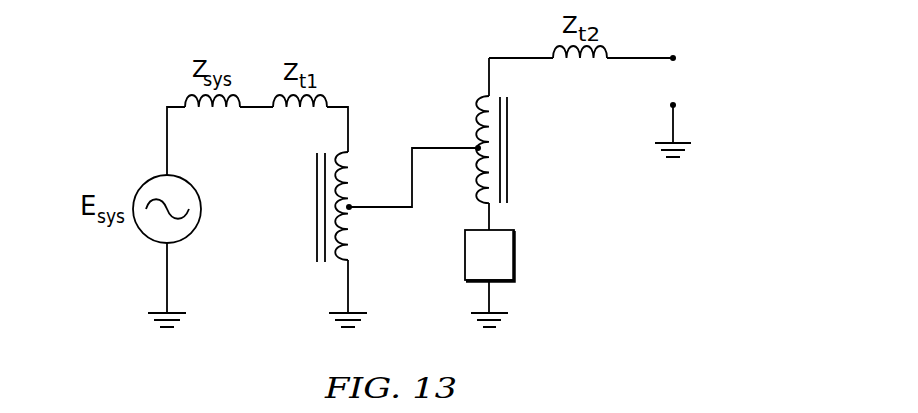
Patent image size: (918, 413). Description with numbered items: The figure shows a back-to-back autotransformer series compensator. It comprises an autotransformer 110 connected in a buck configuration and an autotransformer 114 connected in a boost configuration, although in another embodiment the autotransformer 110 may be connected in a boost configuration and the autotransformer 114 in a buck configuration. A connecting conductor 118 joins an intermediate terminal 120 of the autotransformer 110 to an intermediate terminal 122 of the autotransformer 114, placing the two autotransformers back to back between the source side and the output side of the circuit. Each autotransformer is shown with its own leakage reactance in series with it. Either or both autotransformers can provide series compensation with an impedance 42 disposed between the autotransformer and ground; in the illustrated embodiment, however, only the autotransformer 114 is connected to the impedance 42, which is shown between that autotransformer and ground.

The autotransformer 110 is at (343, 152).
The autotransformer 114 is at (488, 95).
The connecting conductor 118 is at (378, 208).
The intermediate terminal 120 is at (350, 207).
The intermediate terminal 122 is at (477, 147).
The impedance 42 is at (517, 258).